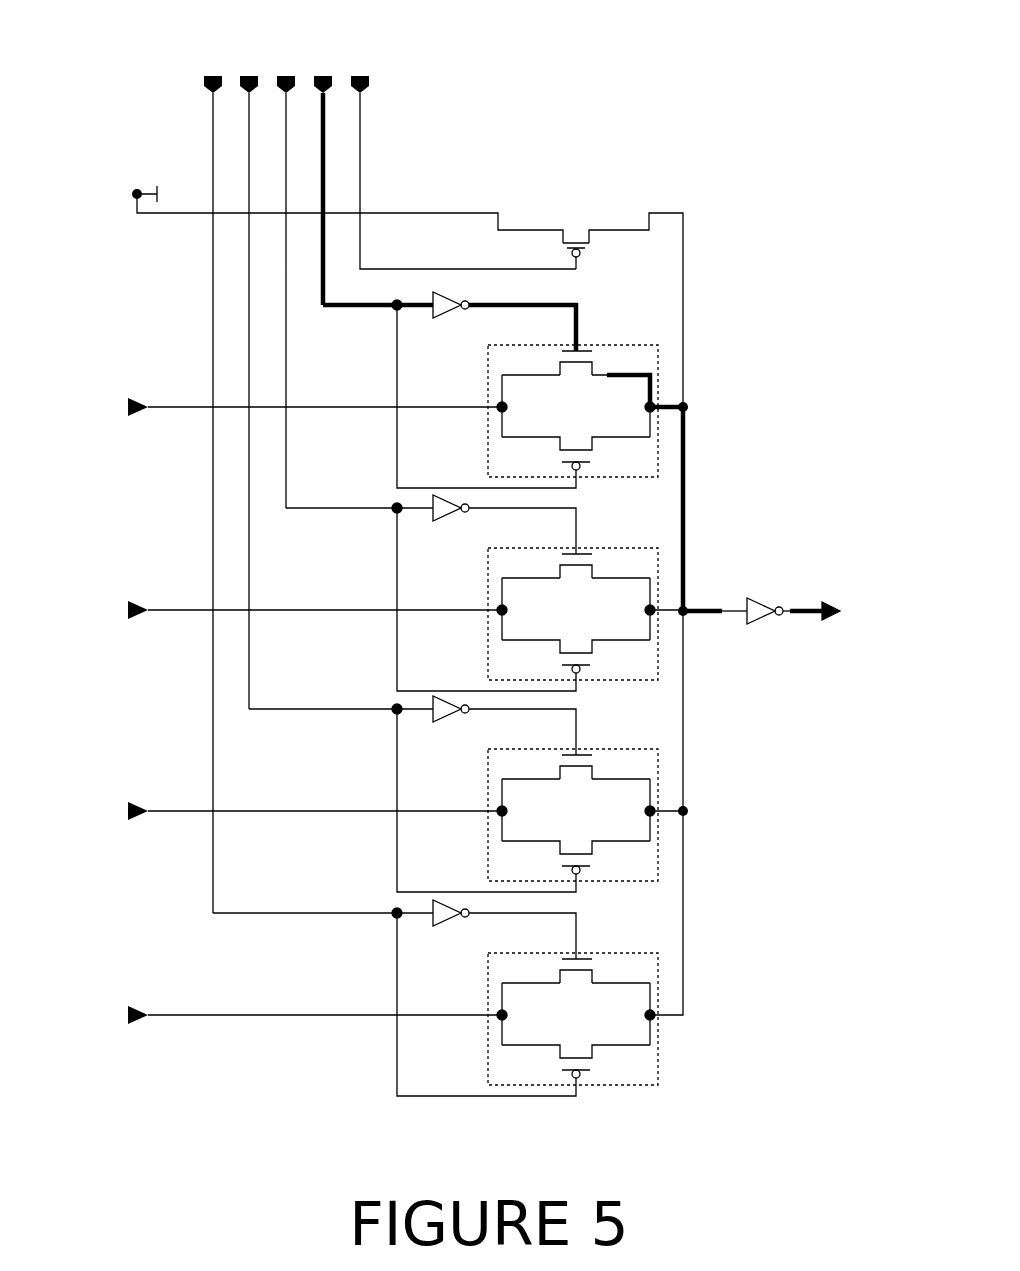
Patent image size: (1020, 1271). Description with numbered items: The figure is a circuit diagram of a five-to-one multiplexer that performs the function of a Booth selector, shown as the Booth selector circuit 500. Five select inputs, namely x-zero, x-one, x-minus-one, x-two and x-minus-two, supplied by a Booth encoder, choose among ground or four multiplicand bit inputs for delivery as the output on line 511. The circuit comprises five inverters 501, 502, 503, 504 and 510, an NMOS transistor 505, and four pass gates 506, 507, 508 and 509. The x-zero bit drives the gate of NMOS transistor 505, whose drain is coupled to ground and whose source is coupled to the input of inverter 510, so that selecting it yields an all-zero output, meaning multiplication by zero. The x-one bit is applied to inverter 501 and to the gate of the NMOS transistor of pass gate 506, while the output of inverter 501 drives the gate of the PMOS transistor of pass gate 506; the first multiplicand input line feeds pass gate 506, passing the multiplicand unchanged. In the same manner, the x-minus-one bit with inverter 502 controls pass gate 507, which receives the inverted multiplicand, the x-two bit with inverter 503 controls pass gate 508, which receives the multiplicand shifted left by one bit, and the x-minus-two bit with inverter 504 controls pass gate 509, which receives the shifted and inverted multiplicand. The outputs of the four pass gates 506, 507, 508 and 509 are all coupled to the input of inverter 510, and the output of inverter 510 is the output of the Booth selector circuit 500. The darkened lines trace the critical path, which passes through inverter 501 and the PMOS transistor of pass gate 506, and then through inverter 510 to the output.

The Booth selector circuit 500 is at (85, 41).
The inverter 501 is at (434, 319).
The inverter 502 is at (434, 522).
The inverter 503 is at (434, 723).
The inverter 504 is at (434, 927).
The NMOS transistor 505 is at (594, 243).
The pass gate 506 is at (652, 345).
The pass gate 507 is at (648, 548).
The pass gate 508 is at (648, 749).
The pass gate 509 is at (648, 953).
The inverter 510 is at (760, 597).
The output line 511 is at (803, 606).